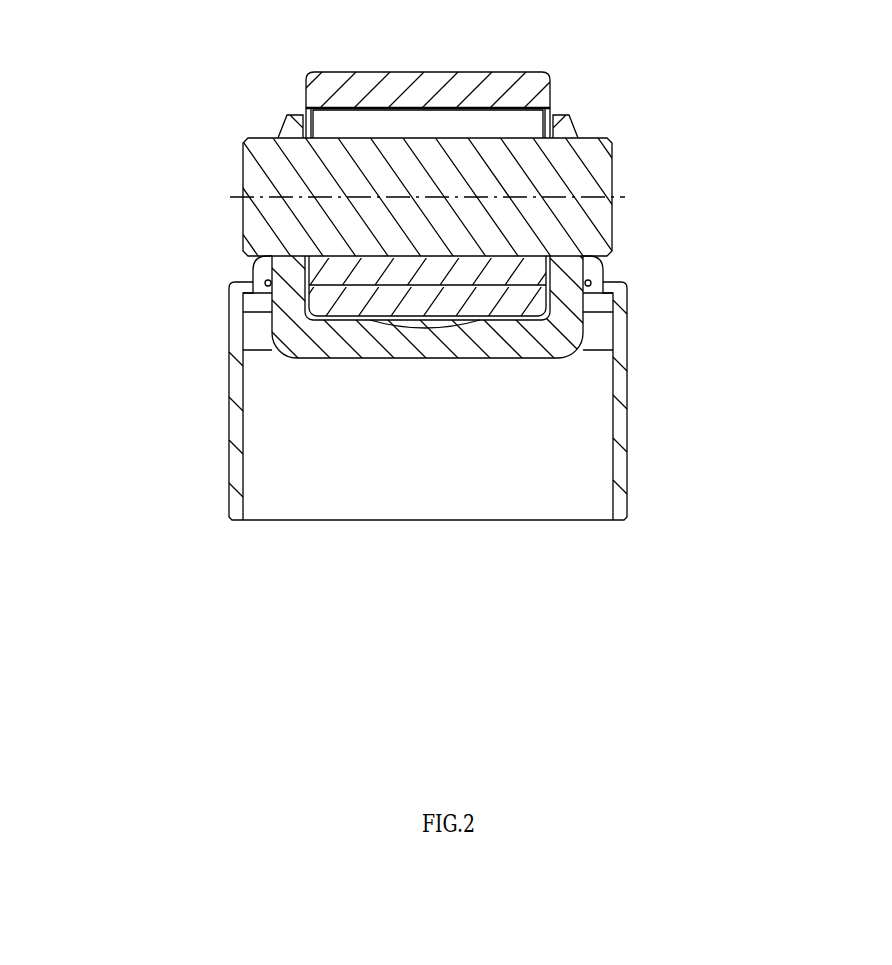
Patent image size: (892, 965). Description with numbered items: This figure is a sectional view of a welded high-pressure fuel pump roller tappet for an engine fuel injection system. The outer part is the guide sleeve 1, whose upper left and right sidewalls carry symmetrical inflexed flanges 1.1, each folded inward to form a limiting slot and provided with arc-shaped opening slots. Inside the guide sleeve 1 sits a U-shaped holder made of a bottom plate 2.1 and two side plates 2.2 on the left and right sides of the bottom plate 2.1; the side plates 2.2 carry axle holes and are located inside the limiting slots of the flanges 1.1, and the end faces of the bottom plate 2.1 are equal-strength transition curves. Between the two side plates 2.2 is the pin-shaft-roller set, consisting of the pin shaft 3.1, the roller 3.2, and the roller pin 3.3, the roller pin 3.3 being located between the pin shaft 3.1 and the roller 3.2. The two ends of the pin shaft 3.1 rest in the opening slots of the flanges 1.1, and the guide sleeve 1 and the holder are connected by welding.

The guide sleeve 1 is at (623, 425).
The flange 1.1 is at (595, 268).
The bottom plate 2.1 is at (348, 342).
The side plate 2.2 is at (285, 285).
The pin shaft 3.1 is at (295, 175).
The roller 3.2 is at (347, 90).
The roller pin 3.3 is at (518, 123).